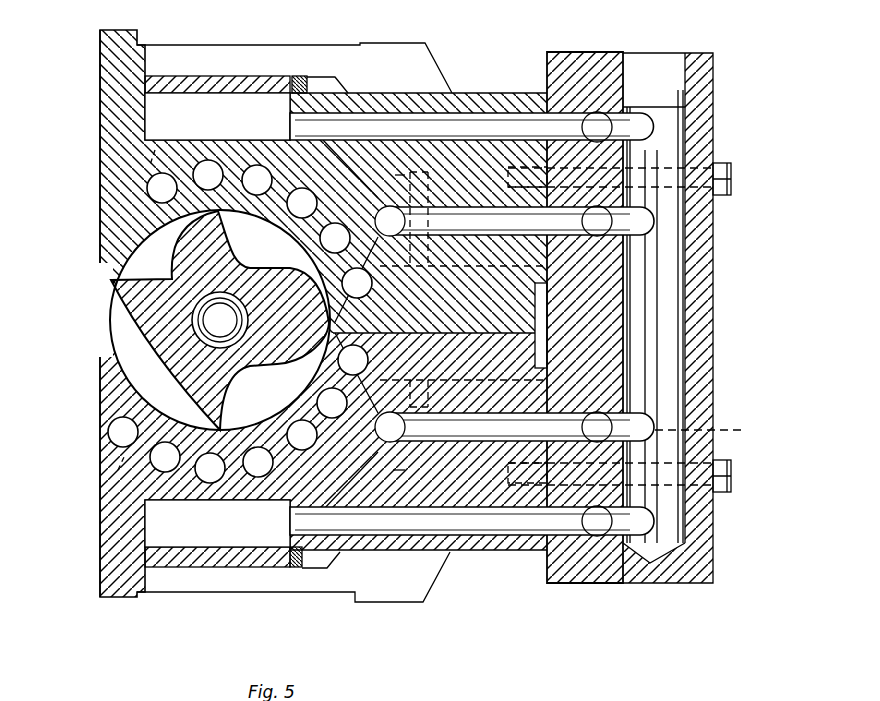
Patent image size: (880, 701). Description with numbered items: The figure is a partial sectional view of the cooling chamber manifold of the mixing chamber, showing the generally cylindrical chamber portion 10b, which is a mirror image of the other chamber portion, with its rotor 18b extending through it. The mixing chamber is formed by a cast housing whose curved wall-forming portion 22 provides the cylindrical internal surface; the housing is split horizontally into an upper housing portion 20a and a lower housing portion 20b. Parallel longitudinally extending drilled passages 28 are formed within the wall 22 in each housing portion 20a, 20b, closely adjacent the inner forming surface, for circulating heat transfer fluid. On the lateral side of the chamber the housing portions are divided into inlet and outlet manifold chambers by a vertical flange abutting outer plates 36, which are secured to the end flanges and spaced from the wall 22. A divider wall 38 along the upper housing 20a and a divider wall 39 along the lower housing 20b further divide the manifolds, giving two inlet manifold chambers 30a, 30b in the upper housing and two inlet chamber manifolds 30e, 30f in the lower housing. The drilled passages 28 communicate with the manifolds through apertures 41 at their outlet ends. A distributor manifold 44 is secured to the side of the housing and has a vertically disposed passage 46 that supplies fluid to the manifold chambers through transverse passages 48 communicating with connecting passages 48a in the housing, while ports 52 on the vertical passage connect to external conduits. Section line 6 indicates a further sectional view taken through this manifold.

The upper housing portion 20a is at (100, 145).
The lower housing portion 20b is at (100, 402).
The curved wall-forming portion 22 is at (100, 218).
The drilled passages 28 is at (160, 196).
The rotor 18b is at (186, 320).
The chamber portion 10b is at (307, 266).
The inlet manifold chamber 30a is at (200, 110).
The inlet manifold chamber 30b is at (395, 175).
The inlet chamber manifold 30e is at (185, 535).
The inlet chamber manifold 30f is at (393, 470).
The outer plates 36 is at (270, 80).
The divider wall 38 is at (288, 101).
The divider wall 39 is at (282, 547).
The apertures 41 is at (155, 150).
The distributor manifold 44 is at (713, 88).
The vertically disposed passage 46 is at (672, 335).
The transverse passages 48 is at (570, 122).
The connecting passages 48a is at (500, 123).
The ports 52 is at (630, 77).
The section line 6- 6 is at (502, 415).